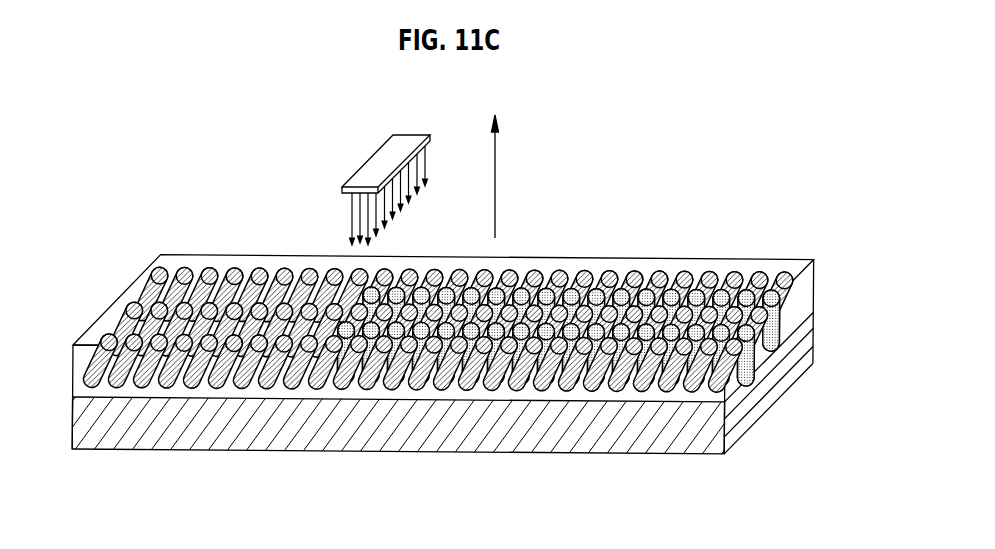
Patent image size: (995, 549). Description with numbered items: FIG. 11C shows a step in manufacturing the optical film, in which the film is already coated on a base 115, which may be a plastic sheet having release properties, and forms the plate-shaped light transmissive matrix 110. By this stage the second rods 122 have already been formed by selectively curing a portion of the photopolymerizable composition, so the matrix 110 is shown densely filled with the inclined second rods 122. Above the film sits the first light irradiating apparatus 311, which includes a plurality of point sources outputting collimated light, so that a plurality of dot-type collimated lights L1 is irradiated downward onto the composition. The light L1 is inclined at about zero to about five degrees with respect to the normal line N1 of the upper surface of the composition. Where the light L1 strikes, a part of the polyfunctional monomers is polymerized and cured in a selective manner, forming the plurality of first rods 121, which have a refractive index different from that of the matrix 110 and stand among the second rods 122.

The light transmissive matrix 110 is at (248, 262).
The base 115 is at (463, 428).
The first rods 121 is at (575, 282).
The second rods 122 is at (210, 270).
The first light irradiating apparatus 311 is at (381, 162).
The light L1 is at (428, 162).
The surface normal direction N1 is at (495, 165).